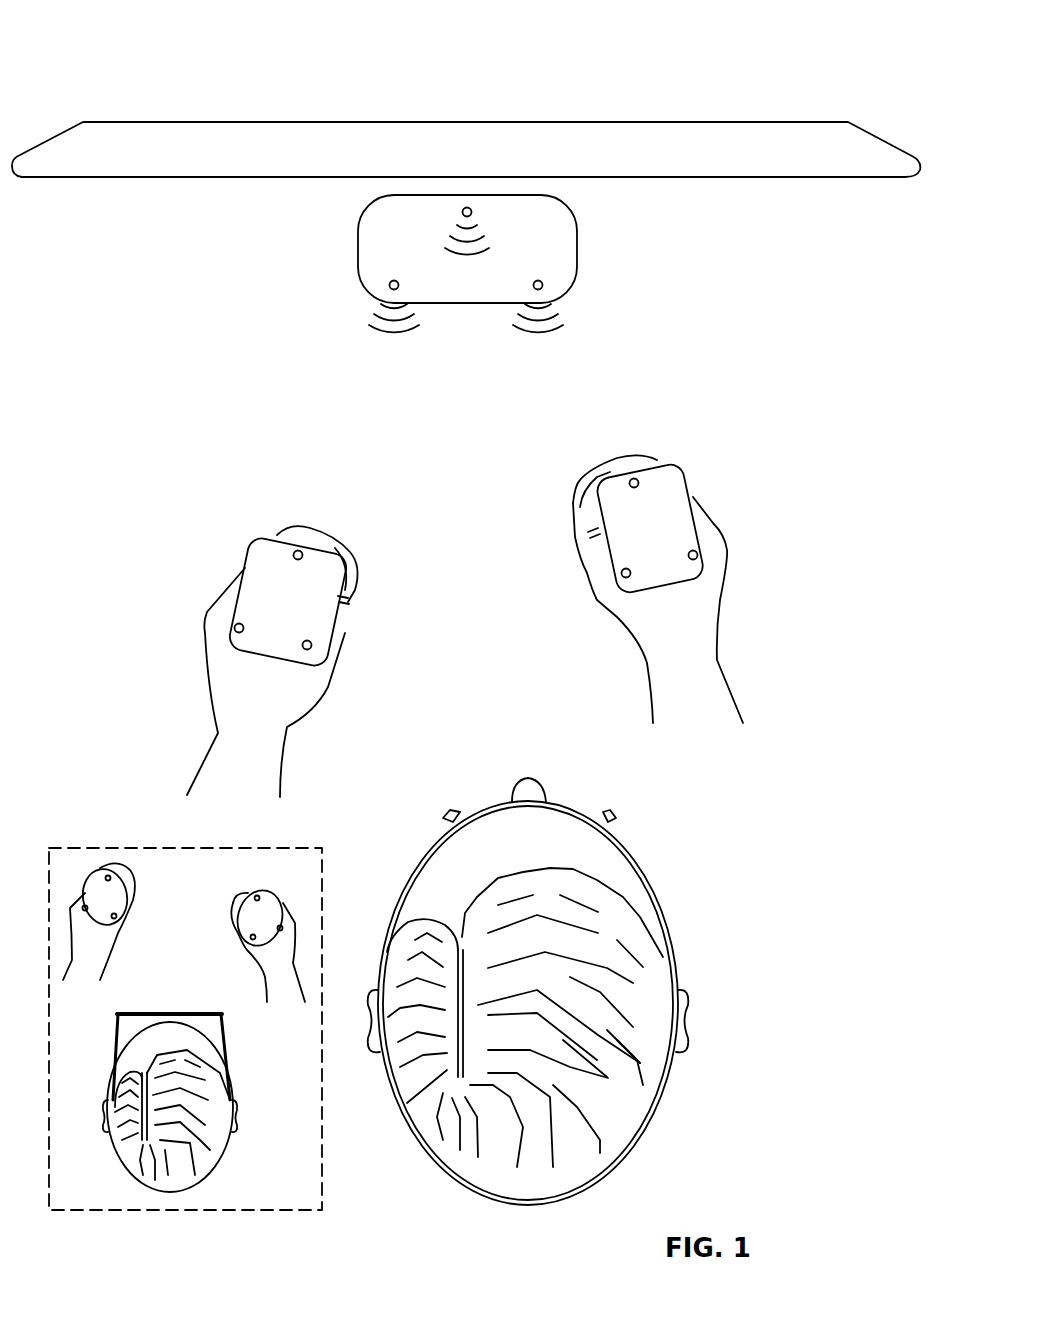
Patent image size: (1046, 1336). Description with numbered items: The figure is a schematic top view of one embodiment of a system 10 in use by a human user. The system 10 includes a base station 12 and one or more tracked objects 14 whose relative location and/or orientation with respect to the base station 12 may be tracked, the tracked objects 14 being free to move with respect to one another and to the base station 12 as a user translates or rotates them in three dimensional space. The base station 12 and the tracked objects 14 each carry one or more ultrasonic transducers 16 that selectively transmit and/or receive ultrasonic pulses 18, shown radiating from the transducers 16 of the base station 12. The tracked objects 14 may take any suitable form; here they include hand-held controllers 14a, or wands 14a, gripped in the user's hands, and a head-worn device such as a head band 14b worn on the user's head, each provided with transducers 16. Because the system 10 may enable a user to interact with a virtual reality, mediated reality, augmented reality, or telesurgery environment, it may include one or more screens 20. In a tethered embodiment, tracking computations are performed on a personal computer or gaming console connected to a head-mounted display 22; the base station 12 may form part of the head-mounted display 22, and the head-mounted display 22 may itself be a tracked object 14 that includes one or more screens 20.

The system 10 is at (139, 52).
The base station 12 is at (357, 217).
The tracked object 14 is at (244, 892).
The hand-held controller 14a is at (247, 540).
The head band 14b is at (636, 846).
The ultrasonic transducer 16 is at (387, 279).
The ultrasonic pulse 18 is at (367, 308).
The screen 20 is at (466, 149).
The head-mounted display 22 is at (116, 1023).